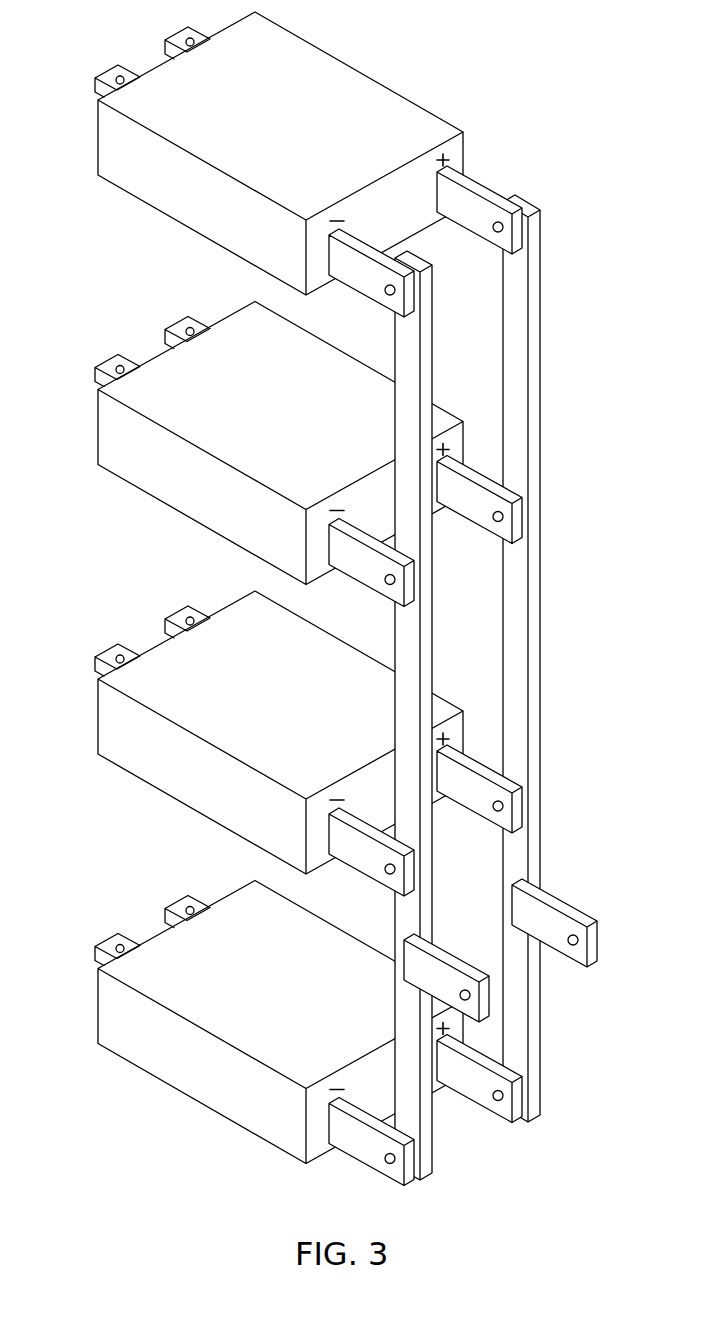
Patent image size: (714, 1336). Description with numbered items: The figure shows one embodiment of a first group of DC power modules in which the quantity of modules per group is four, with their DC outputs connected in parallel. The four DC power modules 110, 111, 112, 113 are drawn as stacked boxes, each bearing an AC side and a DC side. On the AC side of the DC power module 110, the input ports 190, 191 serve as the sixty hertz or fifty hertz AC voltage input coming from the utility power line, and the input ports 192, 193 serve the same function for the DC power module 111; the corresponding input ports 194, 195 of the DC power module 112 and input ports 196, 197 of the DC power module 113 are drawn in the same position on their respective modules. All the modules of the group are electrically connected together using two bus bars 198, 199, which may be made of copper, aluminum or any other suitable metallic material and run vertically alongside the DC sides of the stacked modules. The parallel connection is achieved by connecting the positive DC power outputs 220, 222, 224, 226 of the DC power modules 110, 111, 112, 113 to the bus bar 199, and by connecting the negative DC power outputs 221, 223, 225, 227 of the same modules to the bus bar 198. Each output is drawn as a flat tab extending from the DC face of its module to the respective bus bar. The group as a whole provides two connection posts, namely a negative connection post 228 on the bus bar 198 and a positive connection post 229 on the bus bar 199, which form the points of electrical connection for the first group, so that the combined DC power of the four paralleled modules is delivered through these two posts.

The DC power module 110 is at (98, 165).
The DC power module 111 is at (253, 443).
The DC power module 112 is at (253, 732).
The DC power module 113 is at (253, 1022).
The input port 190 is at (177, 31).
The input port 191 is at (118, 65).
The input port 192 is at (176, 320).
The input port 193 is at (111, 356).
The AC terminal of third module 194 is at (176, 609).
The AC terminal of third module 195 is at (111, 645).
The AC terminal of fourth module 196 is at (176, 899).
The AC terminal of fourth module 197 is at (111, 935).
The bus bar 198 is at (432, 348).
The bus bar 199 is at (540, 357).
The positive DC power output 220 is at (487, 190).
The negative DC power output 221 is at (370, 296).
The positive DC power output 222 is at (483, 528).
The negative DC power output 223 is at (368, 583).
The positive DC power output 224 is at (480, 816).
The negative DC power output 225 is at (371, 874).
The positive DC power output 226 is at (491, 1115).
The negative DC power output 227 is at (370, 1164).
The negative connection post 228 is at (456, 953).
The positive connection post 229 is at (560, 899).